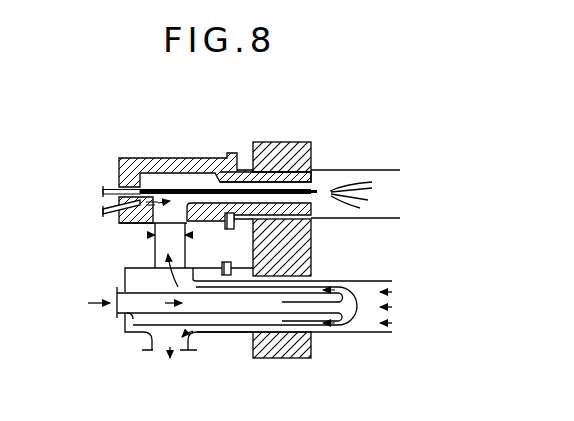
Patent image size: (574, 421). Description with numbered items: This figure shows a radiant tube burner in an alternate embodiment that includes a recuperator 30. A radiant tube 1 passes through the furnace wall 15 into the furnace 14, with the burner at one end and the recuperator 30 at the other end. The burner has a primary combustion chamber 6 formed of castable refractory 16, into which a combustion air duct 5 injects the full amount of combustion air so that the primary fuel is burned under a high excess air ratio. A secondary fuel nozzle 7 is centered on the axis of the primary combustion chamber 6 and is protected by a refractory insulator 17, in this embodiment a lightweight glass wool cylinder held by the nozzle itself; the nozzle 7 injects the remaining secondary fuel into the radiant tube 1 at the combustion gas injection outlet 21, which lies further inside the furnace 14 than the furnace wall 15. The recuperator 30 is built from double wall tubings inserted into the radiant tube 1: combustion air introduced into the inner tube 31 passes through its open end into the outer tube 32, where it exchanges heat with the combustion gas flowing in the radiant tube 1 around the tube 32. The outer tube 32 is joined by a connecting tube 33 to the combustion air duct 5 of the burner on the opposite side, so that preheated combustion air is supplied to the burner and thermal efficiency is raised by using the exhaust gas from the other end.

The radiant tube 1 is at (386, 170).
The combustion air duct 5 is at (147, 230).
The primary combustion chamber 6 is at (200, 175).
The secondary fuel nozzle 7 is at (110, 185).
The furnace 14 is at (374, 155).
The furnace wall 15 is at (312, 146).
The castable refractory 16 is at (153, 170).
The refractory insulator 17 is at (176, 189).
The combustion gas injection outlet 21 is at (311, 203).
The recuperator 30 is at (114, 342).
The inner tube 31 is at (127, 320).
The outer tube 32 is at (125, 278).
The connecting tube 33 is at (155, 250).